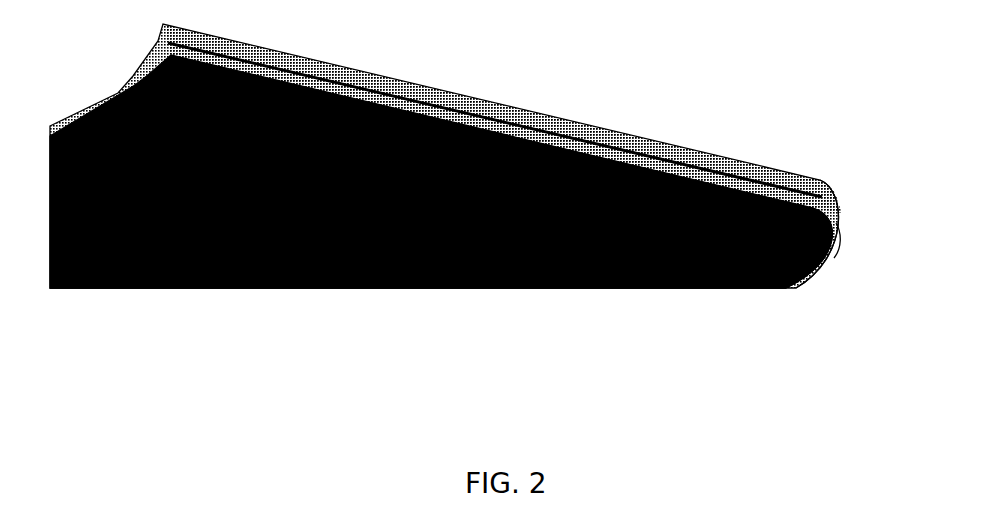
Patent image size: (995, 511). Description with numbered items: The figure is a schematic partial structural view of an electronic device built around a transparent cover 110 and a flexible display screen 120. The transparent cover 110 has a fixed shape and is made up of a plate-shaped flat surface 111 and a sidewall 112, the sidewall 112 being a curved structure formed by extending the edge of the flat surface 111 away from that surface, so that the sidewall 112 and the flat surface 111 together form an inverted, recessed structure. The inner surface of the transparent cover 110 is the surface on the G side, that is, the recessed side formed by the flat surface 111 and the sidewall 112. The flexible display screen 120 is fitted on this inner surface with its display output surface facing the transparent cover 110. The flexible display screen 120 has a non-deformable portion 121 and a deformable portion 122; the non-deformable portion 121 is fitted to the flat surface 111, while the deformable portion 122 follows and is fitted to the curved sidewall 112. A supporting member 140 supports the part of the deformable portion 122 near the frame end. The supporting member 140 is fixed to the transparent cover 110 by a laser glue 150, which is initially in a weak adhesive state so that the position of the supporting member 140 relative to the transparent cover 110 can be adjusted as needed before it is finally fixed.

The transparent cover 110 is at (823, 260).
The flat surface 111 is at (785, 280).
The sidewall 112 is at (835, 207).
The G side G is at (833, 235).
The flexible display screen 120 is at (357, 288).
The non-deformable portion 121 is at (582, 280).
The deformable portion 122 is at (695, 270).
The supporting member 140 is at (560, 117).
The laser glue 150 is at (640, 135).